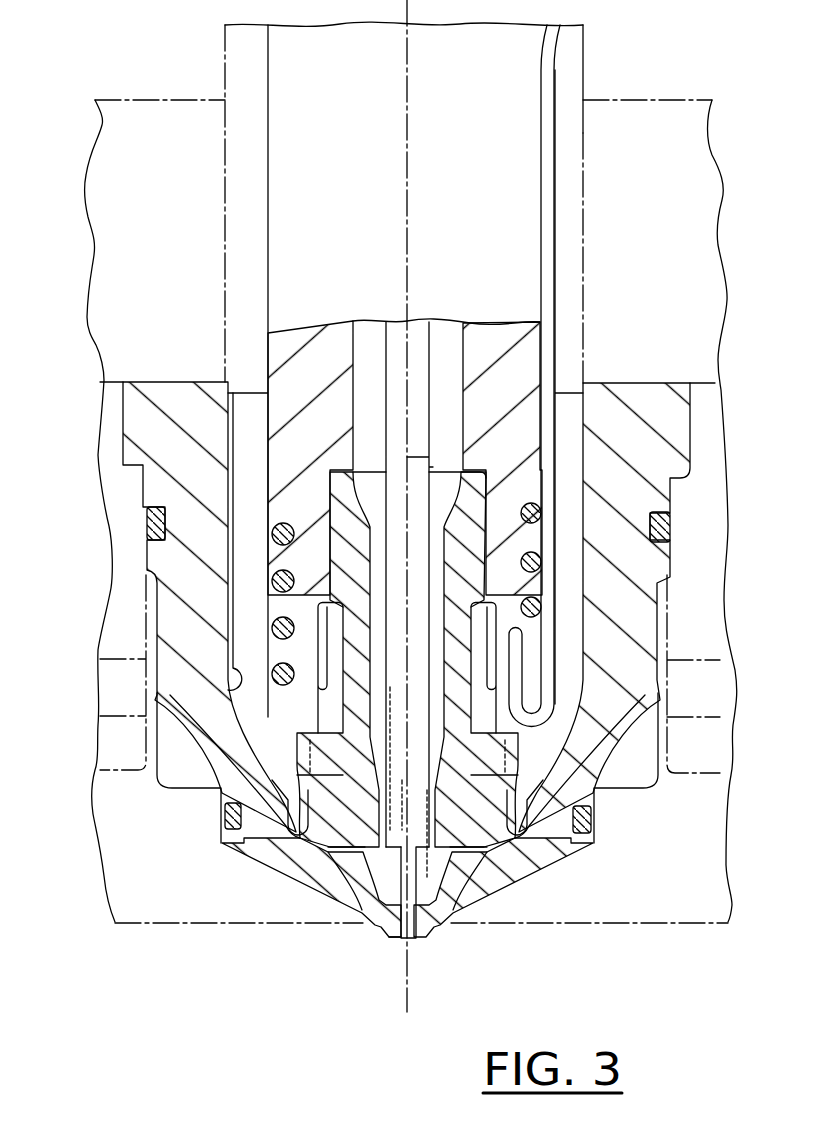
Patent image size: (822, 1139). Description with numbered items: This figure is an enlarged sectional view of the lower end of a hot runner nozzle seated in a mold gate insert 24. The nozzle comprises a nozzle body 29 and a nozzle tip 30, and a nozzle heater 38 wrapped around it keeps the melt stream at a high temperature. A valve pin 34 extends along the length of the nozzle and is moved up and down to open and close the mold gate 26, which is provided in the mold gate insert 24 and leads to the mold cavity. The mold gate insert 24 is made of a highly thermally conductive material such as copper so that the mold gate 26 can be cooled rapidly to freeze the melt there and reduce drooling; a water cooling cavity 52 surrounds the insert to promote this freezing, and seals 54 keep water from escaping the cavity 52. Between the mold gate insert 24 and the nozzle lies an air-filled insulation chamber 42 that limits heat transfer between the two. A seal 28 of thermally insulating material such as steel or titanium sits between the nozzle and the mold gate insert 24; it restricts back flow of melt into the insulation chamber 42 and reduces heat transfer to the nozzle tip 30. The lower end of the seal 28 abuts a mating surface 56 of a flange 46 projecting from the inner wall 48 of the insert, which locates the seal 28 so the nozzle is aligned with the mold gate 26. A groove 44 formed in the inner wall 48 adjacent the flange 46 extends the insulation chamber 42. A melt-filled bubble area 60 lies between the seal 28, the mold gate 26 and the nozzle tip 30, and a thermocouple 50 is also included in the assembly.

The mold gate insert 24 is at (148, 424).
The mold gate 26 is at (400, 937).
The seal 28 is at (593, 797).
The nozzle body 29 is at (527, 353).
The nozzle tip 30 is at (470, 493).
The valve pin 34 is at (415, 937).
The nozzle heater 38 is at (272, 580).
The insulation chamber 42 is at (247, 493).
The groove 44 is at (219, 795).
The flange 46 is at (328, 828).
The inner wall 48 is at (228, 690).
The thermocouple 50 is at (548, 637).
The water cooling cavity 52 is at (650, 743).
The seals 54 is at (672, 524).
The mating surface 56 is at (340, 848).
The bubble area 60 is at (455, 905).